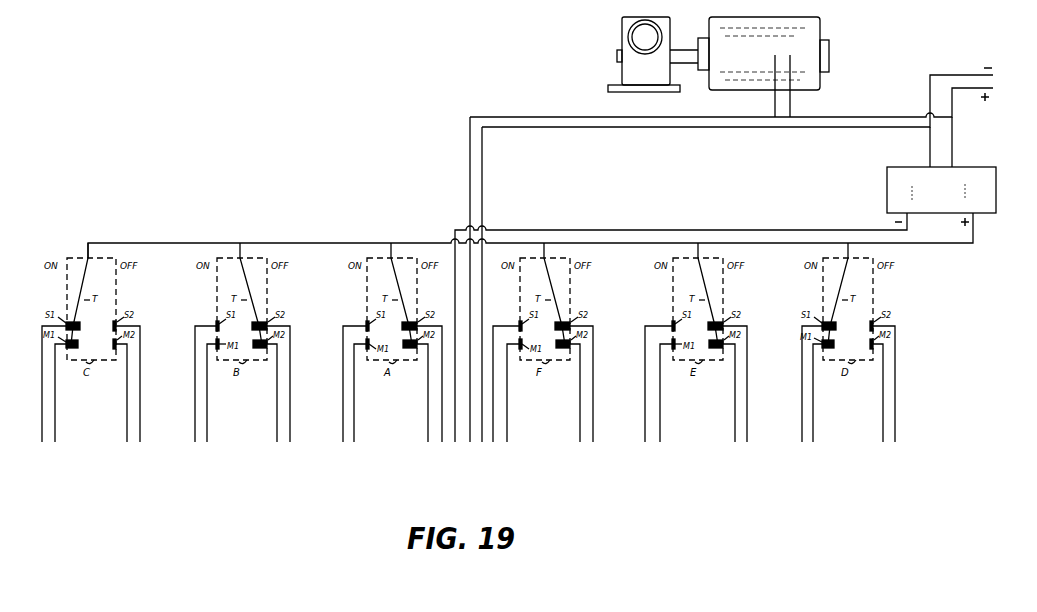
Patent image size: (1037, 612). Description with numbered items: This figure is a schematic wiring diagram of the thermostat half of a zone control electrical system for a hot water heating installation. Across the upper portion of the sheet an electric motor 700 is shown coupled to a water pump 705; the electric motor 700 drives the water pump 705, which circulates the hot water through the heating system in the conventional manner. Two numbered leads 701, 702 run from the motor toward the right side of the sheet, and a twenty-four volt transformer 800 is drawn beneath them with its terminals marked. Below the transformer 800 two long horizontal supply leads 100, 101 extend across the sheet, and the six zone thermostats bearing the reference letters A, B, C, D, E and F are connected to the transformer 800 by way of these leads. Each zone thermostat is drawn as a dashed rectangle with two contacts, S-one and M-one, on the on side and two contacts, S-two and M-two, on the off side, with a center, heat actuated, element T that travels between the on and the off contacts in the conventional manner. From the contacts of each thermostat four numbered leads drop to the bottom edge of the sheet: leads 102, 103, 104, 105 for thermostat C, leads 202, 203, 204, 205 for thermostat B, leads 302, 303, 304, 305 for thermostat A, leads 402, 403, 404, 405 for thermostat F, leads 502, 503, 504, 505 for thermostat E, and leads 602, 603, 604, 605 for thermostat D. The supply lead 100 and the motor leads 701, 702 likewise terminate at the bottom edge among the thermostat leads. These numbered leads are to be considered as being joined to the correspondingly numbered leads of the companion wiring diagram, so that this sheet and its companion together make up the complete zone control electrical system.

The electric motor 700 is at (816, 30).
The water pump 705 is at (635, 34).
The motor lead wire 701 is at (556, 106).
The motor lead wire 702 is at (556, 130).
The 24-volt transformer 800 is at (988, 192).
The negative supply line 100 is at (907, 226).
The positive supply line 101 is at (973, 226).
The switch C terminal 102 is at (42, 442).
The switch C terminal 103 is at (55, 442).
The switch C terminal 104 is at (127, 442).
The switch C terminal 105 is at (140, 442).
The switch B terminal 202 is at (195, 442).
The switch B terminal 203 is at (207, 442).
The switch B terminal 204 is at (277, 442).
The switch B terminal 205 is at (290, 442).
The switch A terminal 302 is at (343, 442).
The switch A terminal 303 is at (354, 442).
The switch A terminal 304 is at (428, 442).
The switch A terminal 305 is at (442, 442).
The switch F terminal 402 is at (493, 442).
The switch F terminal 403 is at (507, 442).
The switch F terminal 404 is at (580, 442).
The switch F terminal 405 is at (593, 442).
The switch E terminal 502 is at (645, 442).
The switch E terminal 503 is at (660, 442).
The switch E terminal 504 is at (735, 442).
The switch E terminal 505 is at (747, 442).
The switch D terminal 602 is at (802, 442).
The switch D terminal 603 is at (813, 442).
The switch D terminal 604 is at (883, 442).
The switch D terminal 605 is at (895, 442).